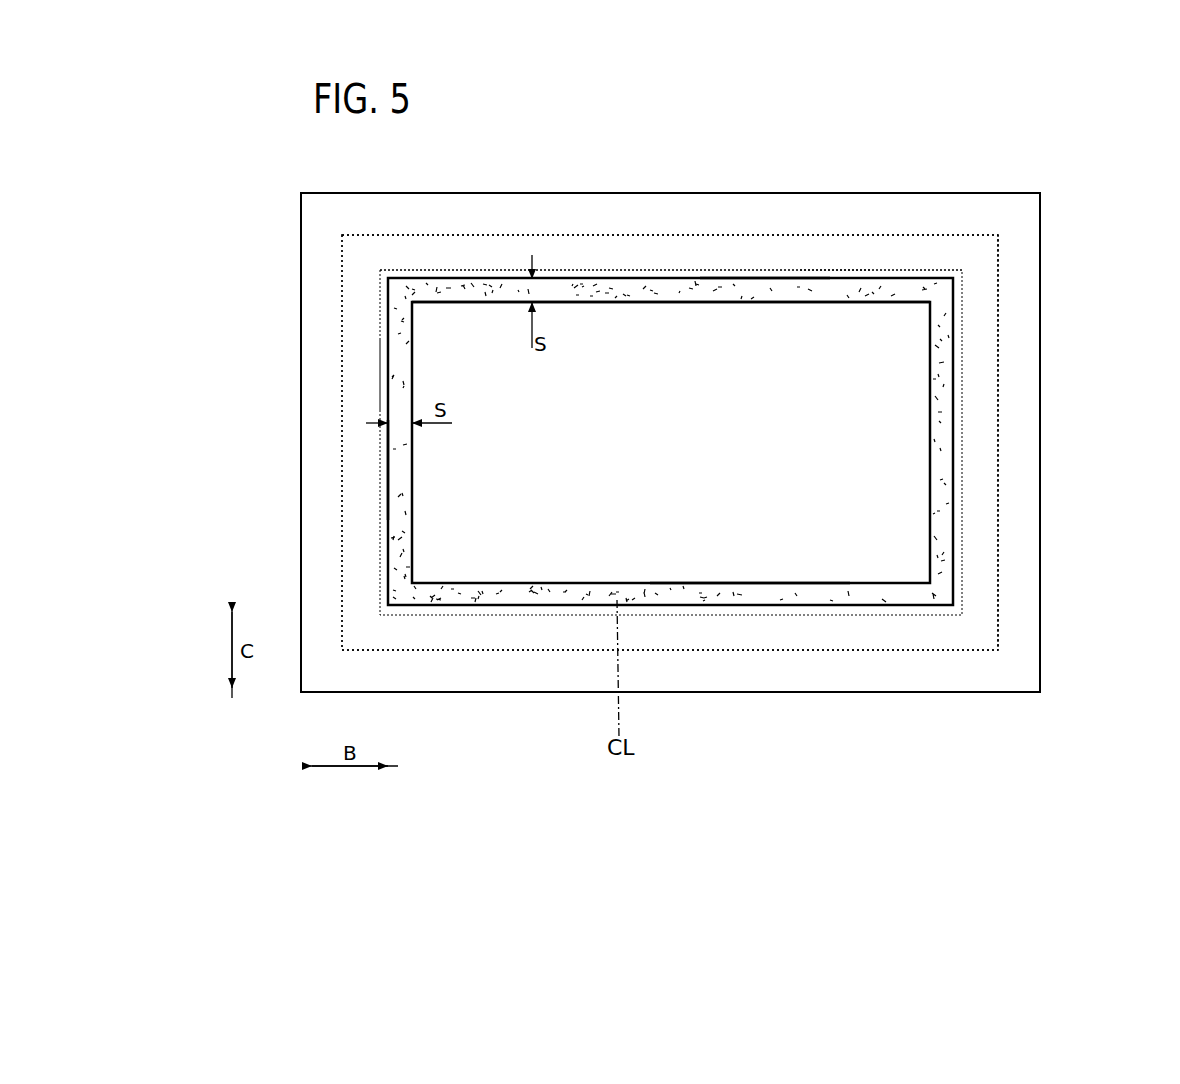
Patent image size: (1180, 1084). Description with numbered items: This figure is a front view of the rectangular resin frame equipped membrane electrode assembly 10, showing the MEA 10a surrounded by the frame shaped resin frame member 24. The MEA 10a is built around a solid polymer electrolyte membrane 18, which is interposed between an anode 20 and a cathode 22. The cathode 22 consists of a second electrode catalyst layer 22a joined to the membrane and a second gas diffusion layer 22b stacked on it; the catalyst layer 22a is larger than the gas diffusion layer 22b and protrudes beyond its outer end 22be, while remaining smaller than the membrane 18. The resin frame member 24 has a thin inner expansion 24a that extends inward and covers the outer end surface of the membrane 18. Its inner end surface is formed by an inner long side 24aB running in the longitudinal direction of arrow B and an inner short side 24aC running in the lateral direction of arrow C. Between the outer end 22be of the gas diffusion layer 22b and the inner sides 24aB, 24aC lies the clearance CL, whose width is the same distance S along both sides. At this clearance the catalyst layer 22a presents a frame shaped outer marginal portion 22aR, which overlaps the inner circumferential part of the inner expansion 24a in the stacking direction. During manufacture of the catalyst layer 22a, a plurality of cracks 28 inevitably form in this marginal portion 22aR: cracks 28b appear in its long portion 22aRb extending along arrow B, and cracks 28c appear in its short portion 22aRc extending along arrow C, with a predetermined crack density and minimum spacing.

The resin frame equipped membrane electrode assembly 10 is at (992, 133).
The MEA 10a is at (1002, 303).
The solid polymer electrolyte membrane 18 is at (881, 640).
The anode 20 is at (670, 442).
The cathode 22 is at (770, 441).
The second electrode catalyst layer 22a is at (963, 492).
The second gas diffusion layer 22b is at (912, 460).
The frame shaped outer marginal portion 22aR is at (585, 284).
The long portion 22aRb is at (763, 290).
The short portion 22aRc is at (397, 468).
The outer end 22be is at (745, 583).
The resin frame member 24 is at (680, 190).
The inner expansion 24a is at (980, 583).
The inner side 24aB is at (826, 292).
The inner side 24aC is at (388, 392).
The cracks 28 is at (482, 285).
The cracks 28b is at (500, 592).
The cracks 28c is at (945, 364).